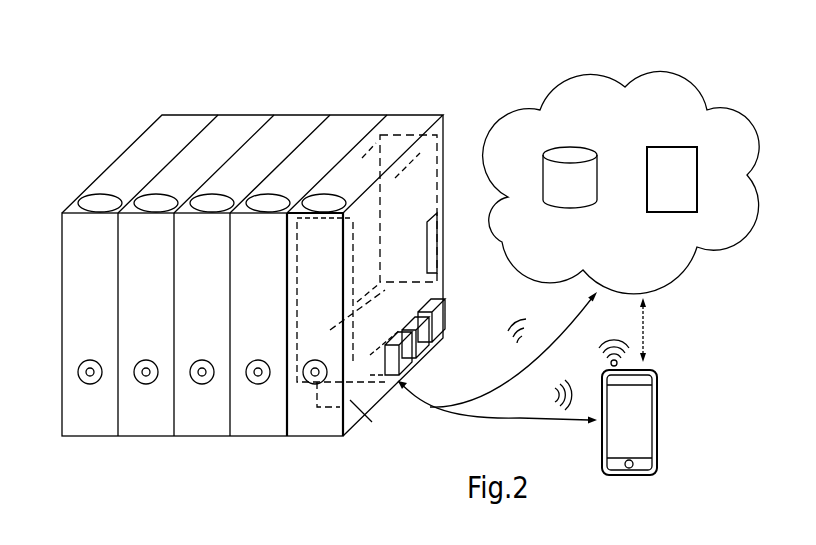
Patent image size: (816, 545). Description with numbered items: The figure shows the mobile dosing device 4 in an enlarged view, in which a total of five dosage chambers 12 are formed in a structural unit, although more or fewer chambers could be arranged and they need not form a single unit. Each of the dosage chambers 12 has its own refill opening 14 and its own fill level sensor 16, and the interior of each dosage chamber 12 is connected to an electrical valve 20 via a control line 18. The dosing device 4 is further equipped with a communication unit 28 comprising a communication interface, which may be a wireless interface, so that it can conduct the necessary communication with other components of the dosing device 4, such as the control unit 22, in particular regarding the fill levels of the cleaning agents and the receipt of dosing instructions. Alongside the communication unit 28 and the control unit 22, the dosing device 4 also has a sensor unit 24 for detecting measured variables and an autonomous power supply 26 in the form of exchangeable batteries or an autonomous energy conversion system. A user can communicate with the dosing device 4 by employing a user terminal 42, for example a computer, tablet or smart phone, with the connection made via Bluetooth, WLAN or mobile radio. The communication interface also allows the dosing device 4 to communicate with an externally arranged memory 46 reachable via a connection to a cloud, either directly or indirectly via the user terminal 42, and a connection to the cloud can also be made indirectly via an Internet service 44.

The dosing device 4 is at (74, 110).
The dosage chambers 12 is at (443, 58).
The refill openings 14 is at (322, 197).
The fill level sensor 16 is at (440, 245).
The control line 18 is at (350, 402).
The electrical valve 20 is at (312, 384).
The control unit 22 is at (445, 306).
The sensor unit 24 is at (420, 355).
The autonomous power supply 26 is at (412, 372).
The communication unit 28 is at (392, 392).
The user terminal 42 is at (660, 415).
The Internet service 44 is at (684, 191).
The externally arranged memory 46 is at (582, 196).